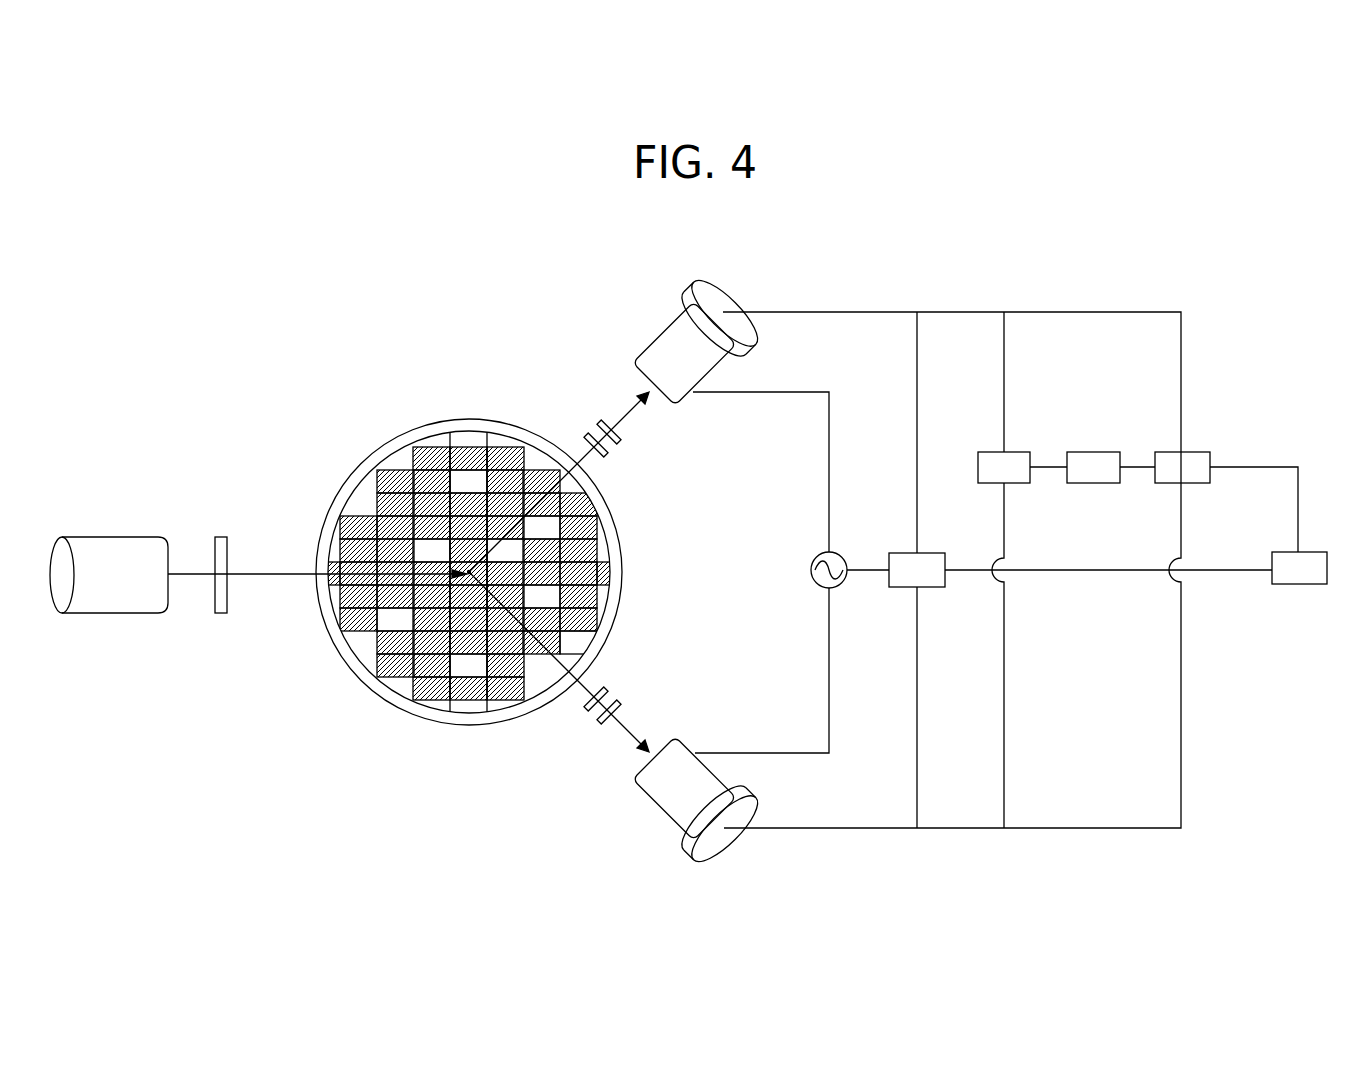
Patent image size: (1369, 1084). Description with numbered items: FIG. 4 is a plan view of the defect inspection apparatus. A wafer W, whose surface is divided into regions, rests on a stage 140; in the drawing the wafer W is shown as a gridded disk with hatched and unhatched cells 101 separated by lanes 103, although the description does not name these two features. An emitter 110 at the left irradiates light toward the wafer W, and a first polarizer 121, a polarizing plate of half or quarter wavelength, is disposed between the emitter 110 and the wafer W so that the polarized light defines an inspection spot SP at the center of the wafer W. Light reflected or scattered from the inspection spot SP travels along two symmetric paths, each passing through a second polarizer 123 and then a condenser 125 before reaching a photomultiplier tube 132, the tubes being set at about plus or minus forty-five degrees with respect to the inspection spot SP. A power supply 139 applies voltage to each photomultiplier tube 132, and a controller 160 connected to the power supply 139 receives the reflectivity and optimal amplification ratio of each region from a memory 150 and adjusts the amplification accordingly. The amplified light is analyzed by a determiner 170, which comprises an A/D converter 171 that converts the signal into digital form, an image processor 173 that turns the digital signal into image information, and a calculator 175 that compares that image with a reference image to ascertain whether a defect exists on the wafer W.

The emitter 110 is at (100, 545).
The first polarizer 121 is at (221, 545).
The second polarizer 123 is at (590, 432).
The condenser 125 is at (600, 422).
The photomultiplier tube 132 is at (663, 347).
The power supply 139 is at (838, 555).
The stage 140 is at (405, 432).
The memory 150 is at (1320, 552).
The controller 160 is at (940, 553).
The determiner 170 is at (1138, 457).
The A/D converter 171 is at (1027, 452).
The image processor 173 is at (1113, 452).
The calculator 175 is at (1199, 443).
The chip region 101 is at (470, 667).
The scribe lane 103 is at (503, 670).
The wafer W is at (372, 478).
The inspection spot SP is at (466, 562).